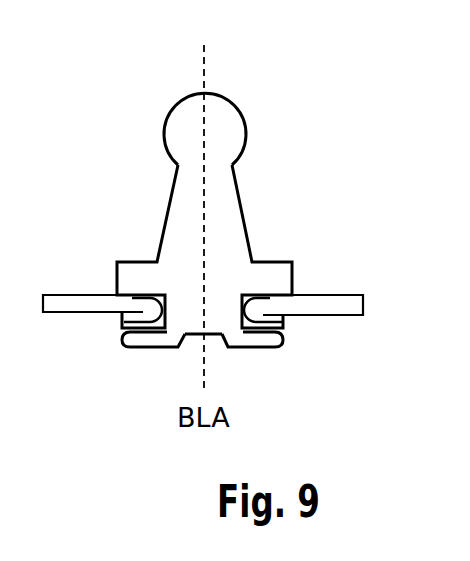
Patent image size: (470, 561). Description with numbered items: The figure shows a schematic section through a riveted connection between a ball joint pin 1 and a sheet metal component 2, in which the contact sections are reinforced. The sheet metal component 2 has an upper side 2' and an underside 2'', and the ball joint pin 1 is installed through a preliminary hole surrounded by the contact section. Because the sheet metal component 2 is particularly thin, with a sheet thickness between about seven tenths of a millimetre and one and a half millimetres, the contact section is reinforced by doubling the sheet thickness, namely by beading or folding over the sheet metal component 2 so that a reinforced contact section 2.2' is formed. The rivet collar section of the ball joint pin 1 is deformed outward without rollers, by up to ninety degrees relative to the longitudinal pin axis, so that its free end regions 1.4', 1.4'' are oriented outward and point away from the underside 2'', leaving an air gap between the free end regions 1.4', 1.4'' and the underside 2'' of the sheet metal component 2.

The ball joint pin 1 is at (223, 266).
The free end region of the rivet collar section 1.4' is at (125, 407).
The free end region of the rivet collar section 1.4'' is at (298, 384).
The sheet metal component 2 is at (235, 294).
The upper side of the sheet metal component 2' is at (93, 267).
The underside of the sheet metal component 2'' is at (323, 340).
The reinforced contact section 2.2' is at (112, 353).